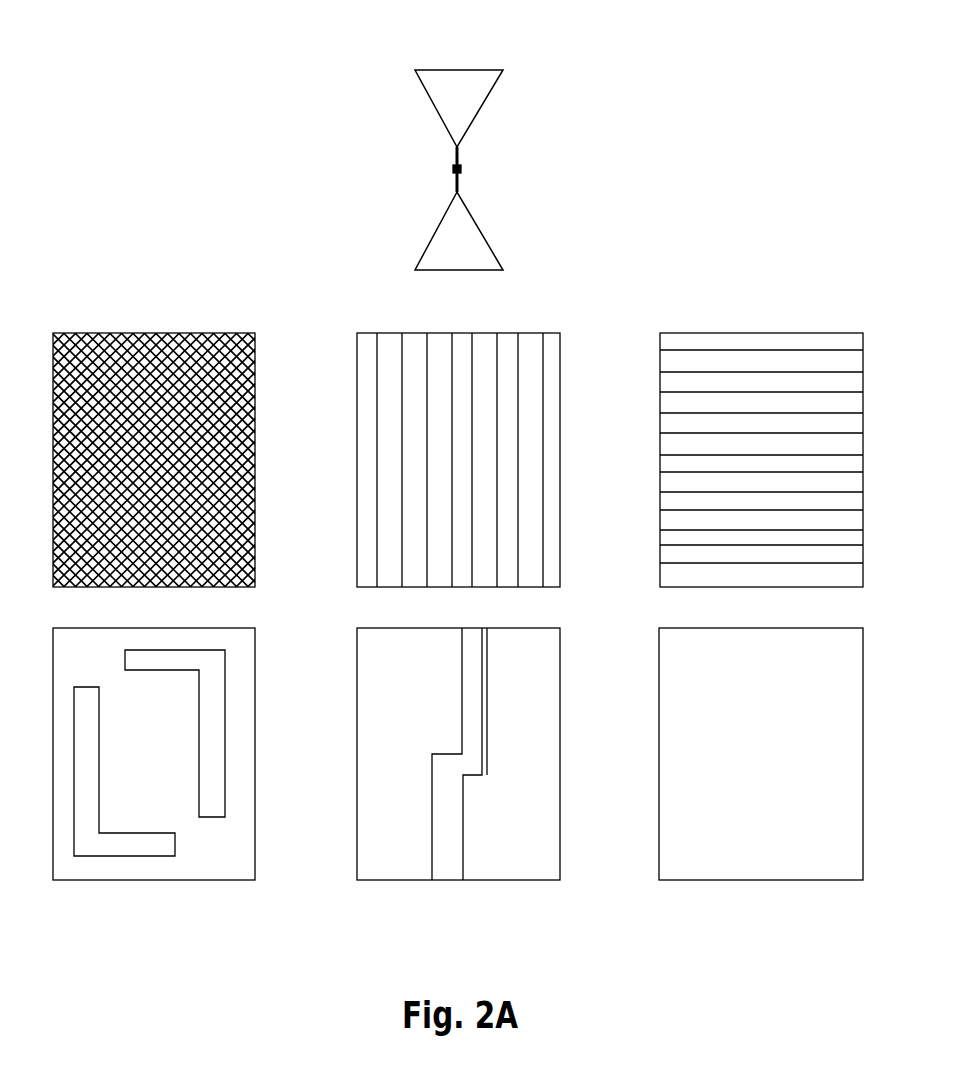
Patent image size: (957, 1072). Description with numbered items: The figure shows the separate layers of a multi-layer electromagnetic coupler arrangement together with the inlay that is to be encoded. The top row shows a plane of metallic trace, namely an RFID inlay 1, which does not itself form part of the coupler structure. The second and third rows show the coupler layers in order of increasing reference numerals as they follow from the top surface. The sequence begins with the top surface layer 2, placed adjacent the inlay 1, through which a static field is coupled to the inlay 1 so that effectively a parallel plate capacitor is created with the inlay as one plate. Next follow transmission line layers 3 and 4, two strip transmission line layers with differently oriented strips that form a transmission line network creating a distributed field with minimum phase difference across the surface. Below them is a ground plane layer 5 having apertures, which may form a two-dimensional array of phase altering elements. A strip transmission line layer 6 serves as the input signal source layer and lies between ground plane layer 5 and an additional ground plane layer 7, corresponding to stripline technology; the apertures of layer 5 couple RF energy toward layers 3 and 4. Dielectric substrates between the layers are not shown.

The inlay 1 is at (435, 82).
The top surface layer 2 is at (128, 353).
The transmission line layer 3 is at (428, 352).
The transmission line layer 4 is at (736, 348).
The ground plane layer 5 is at (127, 644).
The strip transmission line layer 6 is at (432, 645).
The additional ground plane layer 7 is at (729, 643).